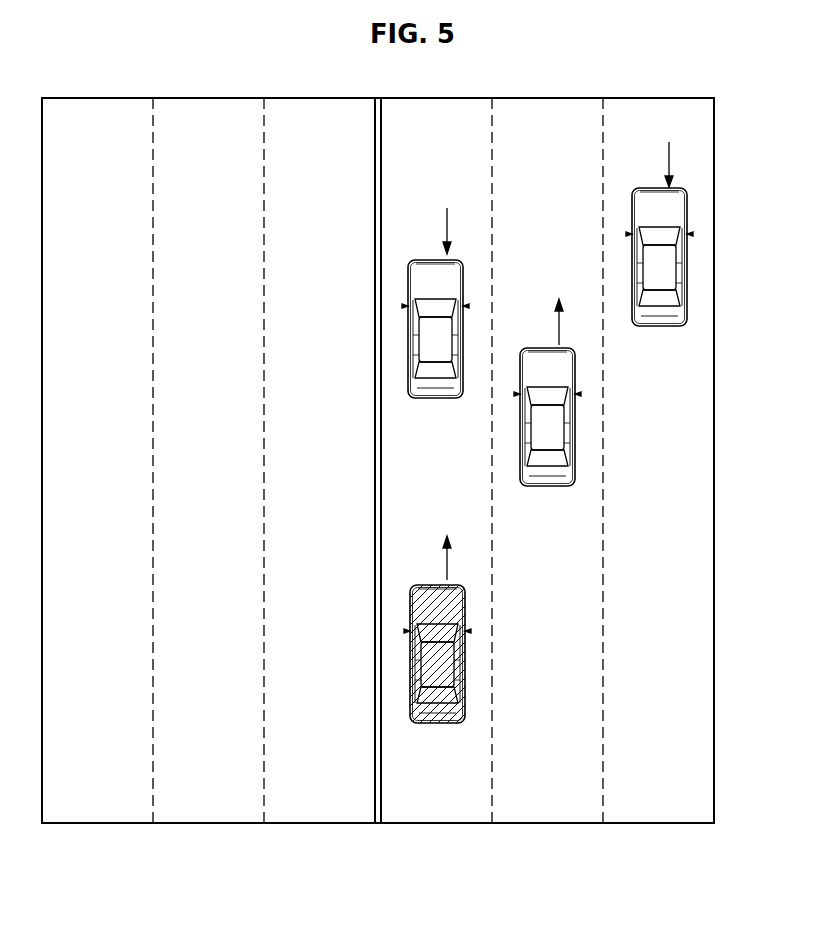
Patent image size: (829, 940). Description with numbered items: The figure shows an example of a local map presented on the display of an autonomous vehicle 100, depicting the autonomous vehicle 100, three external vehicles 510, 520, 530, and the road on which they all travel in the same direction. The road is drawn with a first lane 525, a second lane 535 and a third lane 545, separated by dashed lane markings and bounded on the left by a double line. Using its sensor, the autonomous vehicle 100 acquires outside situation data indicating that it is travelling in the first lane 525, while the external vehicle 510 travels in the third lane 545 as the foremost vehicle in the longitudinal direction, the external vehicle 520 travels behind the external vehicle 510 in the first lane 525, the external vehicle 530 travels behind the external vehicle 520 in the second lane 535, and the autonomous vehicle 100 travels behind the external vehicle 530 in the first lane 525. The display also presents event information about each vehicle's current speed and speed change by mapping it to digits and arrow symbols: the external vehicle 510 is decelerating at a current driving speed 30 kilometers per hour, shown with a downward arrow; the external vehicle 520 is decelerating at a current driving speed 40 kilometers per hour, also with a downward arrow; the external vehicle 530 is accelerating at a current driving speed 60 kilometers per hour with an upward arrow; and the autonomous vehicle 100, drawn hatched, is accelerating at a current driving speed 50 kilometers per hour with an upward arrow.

The autonomous vehicle 100 is at (432, 723).
The external vehicle 510 is at (685, 265).
The external vehicle 520 is at (408, 338).
The external vehicle 530 is at (575, 425).
The first lane 525 is at (478, 803).
The second lane 535 is at (548, 803).
The third lane 545 is at (658, 803).
The current driving speed of external vehicle 510 30 is at (655, 164).
The current driving speed of external vehicle 520 40 is at (434, 231).
The current driving speed of autonomous vehicle 100 50 is at (434, 558).
The current driving speed of external vehicle 530 60 is at (545, 322).